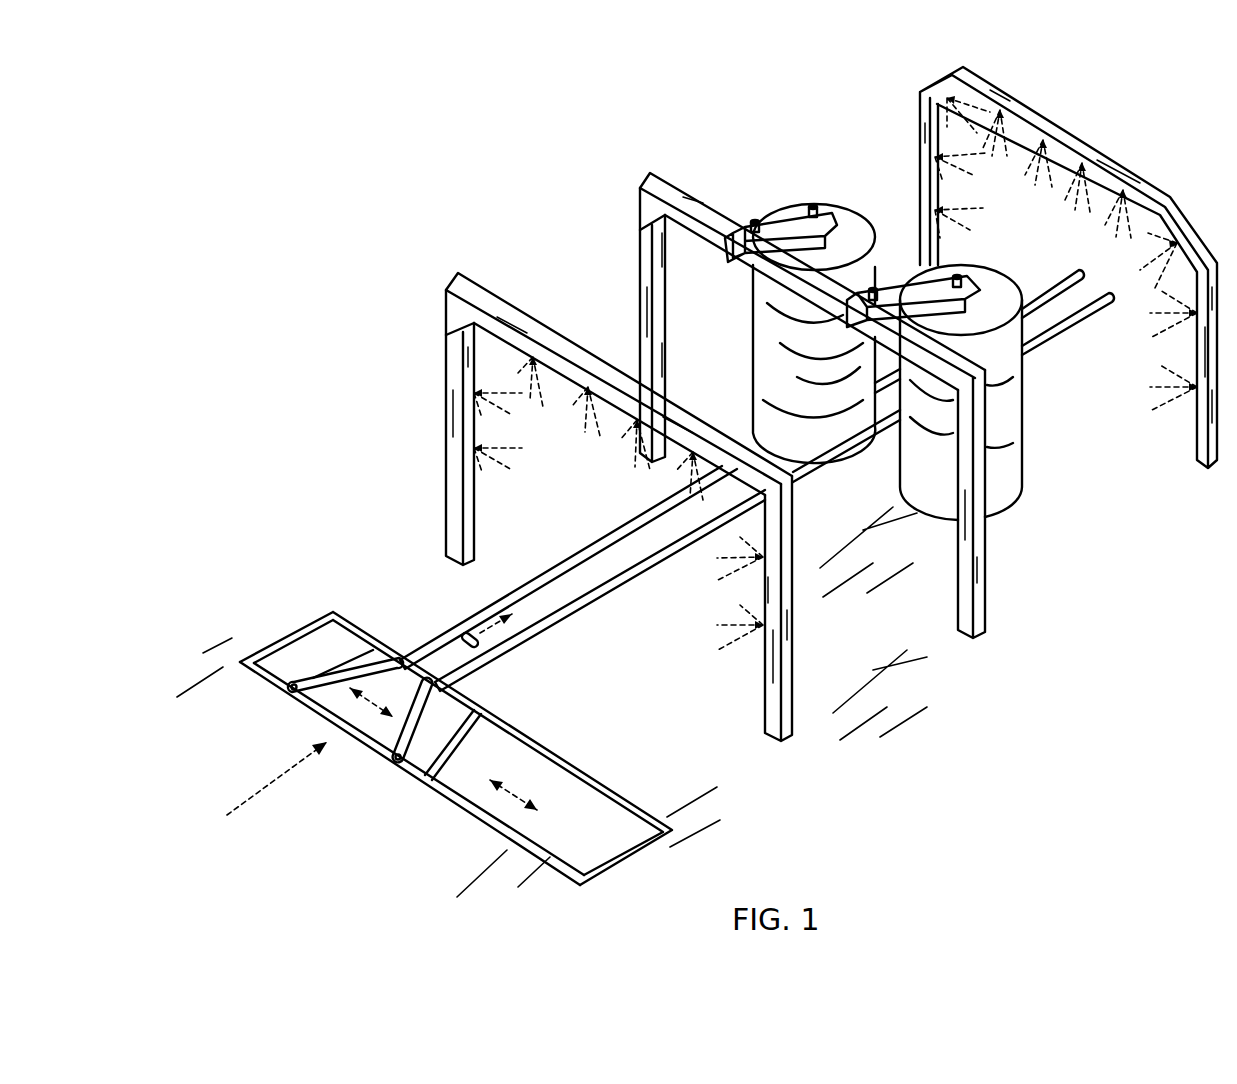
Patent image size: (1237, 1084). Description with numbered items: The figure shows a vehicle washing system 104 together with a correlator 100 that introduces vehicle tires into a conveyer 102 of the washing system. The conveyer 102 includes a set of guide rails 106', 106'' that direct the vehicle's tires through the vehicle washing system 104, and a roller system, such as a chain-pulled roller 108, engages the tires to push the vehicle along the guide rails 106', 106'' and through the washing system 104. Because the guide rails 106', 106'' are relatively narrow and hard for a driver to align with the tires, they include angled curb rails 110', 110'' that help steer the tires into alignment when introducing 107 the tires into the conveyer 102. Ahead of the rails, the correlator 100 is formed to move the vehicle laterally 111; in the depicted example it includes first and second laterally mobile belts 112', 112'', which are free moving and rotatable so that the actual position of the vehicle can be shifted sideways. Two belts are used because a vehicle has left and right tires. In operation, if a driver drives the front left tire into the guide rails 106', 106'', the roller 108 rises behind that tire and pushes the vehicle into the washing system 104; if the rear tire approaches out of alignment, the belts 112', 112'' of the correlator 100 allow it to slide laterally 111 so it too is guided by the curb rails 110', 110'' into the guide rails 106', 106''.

The correlator 100 is at (693, 482).
The conveyer 102 is at (437, 741).
The vehicle washing system 104 is at (437, 202).
The first guide rail 106' is at (568, 567).
The second guide rail 106'' is at (667, 550).
The introducing direction 107 is at (290, 770).
The chain-pulled roller 108 is at (470, 637).
The first angled curb rail 110' is at (319, 611).
The second angled curb rail 110'' is at (492, 717).
The lateral direction 111 is at (478, 818).
The first laterally mobile belt 112' is at (281, 722).
The second laterally mobile belt 112'' is at (597, 769).